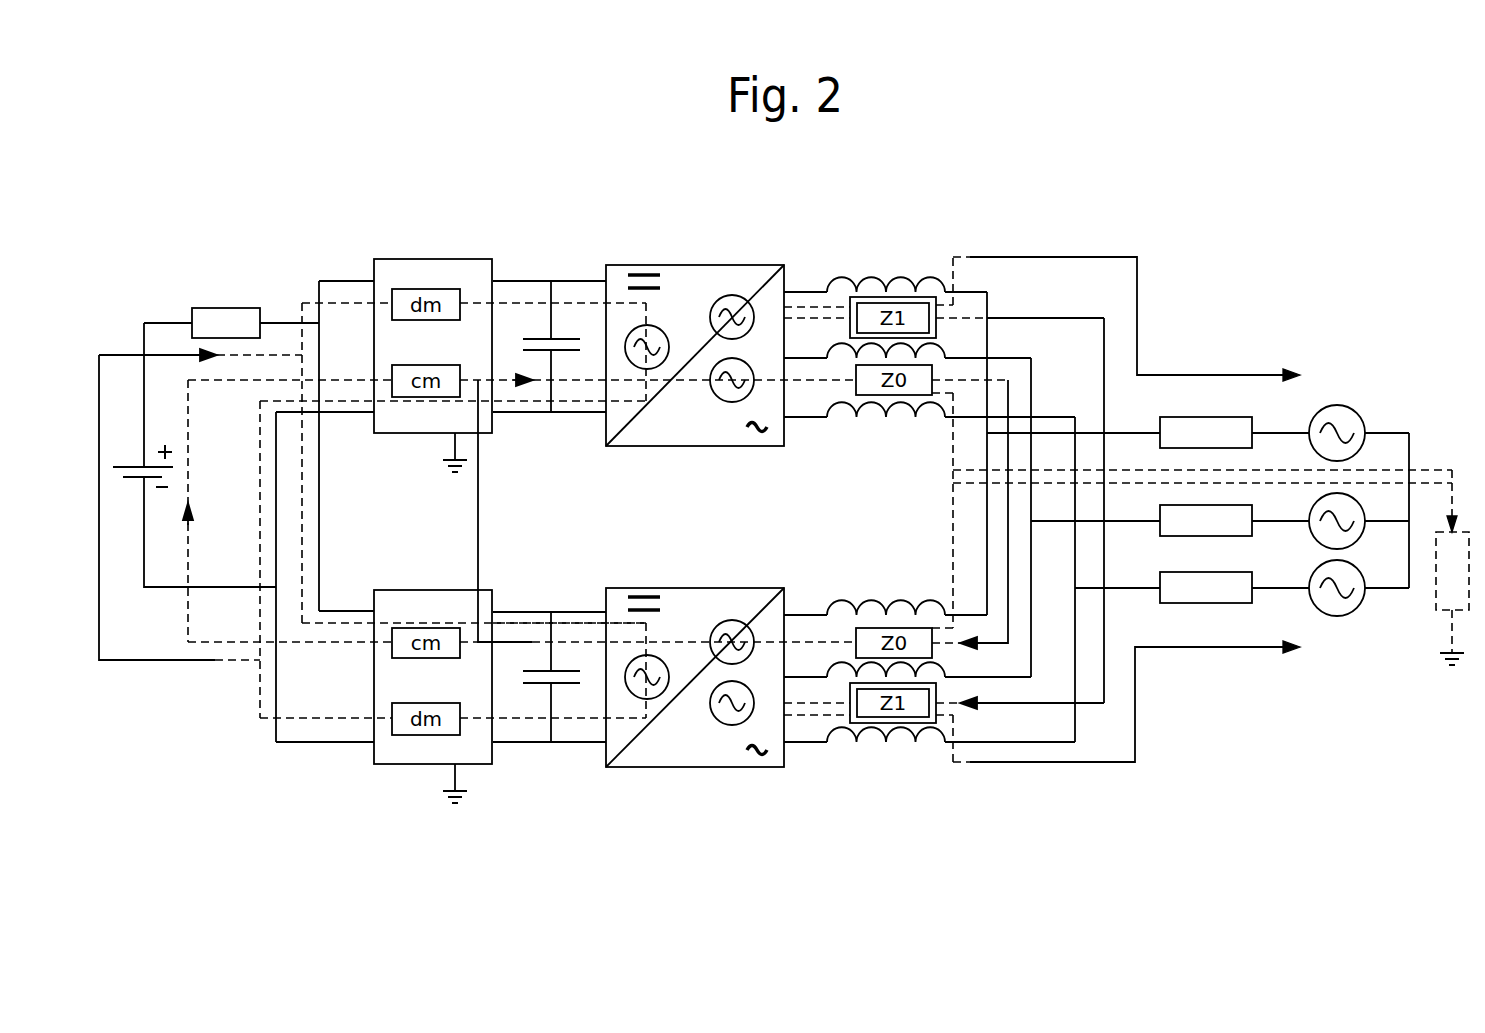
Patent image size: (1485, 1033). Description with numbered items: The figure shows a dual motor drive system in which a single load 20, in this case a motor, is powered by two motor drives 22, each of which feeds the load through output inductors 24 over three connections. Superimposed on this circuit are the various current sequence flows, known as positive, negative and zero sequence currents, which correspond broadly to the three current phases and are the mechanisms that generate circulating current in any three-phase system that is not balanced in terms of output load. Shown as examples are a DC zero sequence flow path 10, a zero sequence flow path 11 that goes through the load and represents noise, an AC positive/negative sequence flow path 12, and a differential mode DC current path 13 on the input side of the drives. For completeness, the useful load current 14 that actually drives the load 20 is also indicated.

The DC zero sequence flow path 10 is at (1002, 382).
The zero sequence flow path 11 is at (1130, 470).
The AC positive/negative sequence flow path 12 is at (1104, 683).
The differential mode DC current path 13 is at (104, 352).
The useful load current 14 is at (1237, 372).
The load 20 is at (1357, 388).
The motor drive 22 is at (665, 266).
The output inductor 24 is at (877, 268).